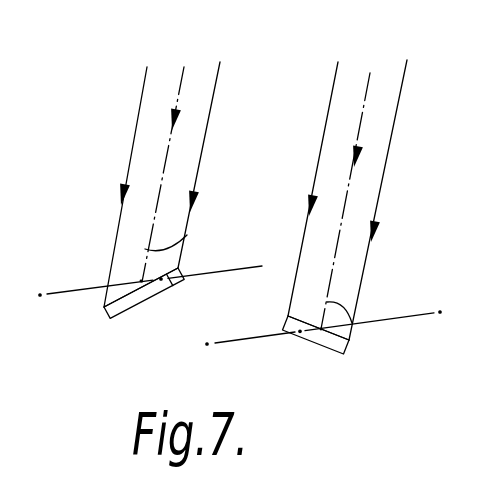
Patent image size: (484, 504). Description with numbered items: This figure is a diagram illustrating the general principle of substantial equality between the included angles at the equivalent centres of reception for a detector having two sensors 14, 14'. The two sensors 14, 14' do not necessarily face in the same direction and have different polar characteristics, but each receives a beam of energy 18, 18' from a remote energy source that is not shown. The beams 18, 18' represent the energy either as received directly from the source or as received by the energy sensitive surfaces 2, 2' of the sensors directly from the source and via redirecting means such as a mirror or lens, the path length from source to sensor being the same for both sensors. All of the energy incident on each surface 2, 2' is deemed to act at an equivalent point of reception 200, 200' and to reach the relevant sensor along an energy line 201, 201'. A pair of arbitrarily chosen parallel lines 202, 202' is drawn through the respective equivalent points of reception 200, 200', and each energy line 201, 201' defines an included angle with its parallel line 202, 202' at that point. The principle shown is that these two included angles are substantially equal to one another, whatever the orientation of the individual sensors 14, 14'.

The beam of energy 18 is at (162, 163).
The energy line 201 is at (206, 174).
The parallel line 202 is at (149, 313).
The sensor 14 is at (144, 313).
The energy sensitive surface 2 is at (123, 280).
The equivalent point of reception 200 is at (94, 253).
The beam of energy 18' is at (347, 172).
The energy line 201' is at (396, 201).
The parallel line 202' is at (323, 354).
The sensor 14' is at (346, 359).
The energy sensitive surface 2' is at (351, 334).
The equivalent point of reception 200' is at (333, 368).